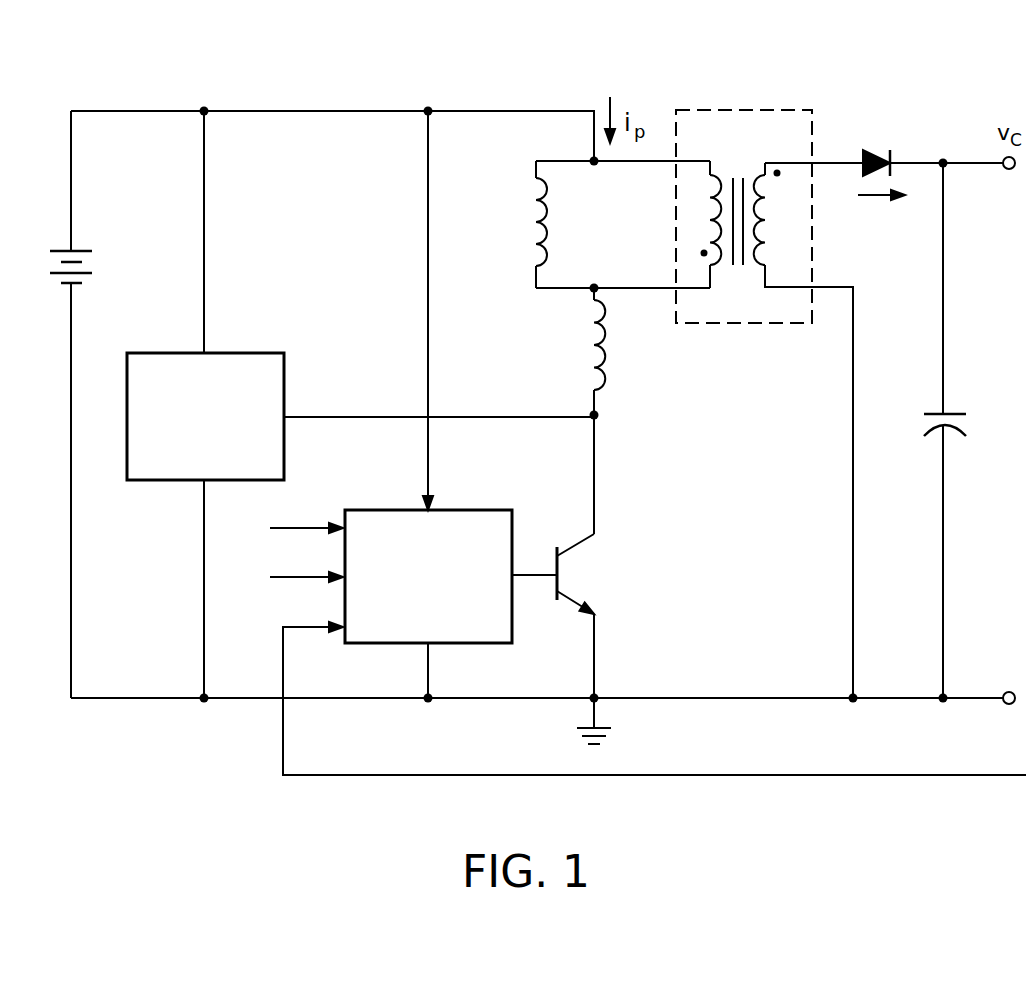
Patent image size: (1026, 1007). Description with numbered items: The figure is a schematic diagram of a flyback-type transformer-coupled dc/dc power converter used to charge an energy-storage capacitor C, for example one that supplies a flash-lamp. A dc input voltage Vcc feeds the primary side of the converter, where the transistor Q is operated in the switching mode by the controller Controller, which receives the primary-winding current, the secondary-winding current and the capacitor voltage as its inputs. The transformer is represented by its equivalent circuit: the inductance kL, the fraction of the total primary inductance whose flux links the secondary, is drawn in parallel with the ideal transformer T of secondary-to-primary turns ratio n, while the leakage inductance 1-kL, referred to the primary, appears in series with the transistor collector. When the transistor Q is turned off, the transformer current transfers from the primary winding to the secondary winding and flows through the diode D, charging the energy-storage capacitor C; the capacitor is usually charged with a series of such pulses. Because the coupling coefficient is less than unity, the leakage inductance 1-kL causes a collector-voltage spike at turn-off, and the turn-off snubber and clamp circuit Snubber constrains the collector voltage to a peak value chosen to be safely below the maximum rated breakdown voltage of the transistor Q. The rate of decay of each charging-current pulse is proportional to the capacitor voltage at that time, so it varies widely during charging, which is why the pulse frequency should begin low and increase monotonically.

The dc input voltage Vcc is at (108, 298).
The turn-off snubber and/or clamp circuit Snubber is at (205, 416).
The controller Controller is at (632, 622).
The transformer inductance in parallel with ideal transformer kL is at (595, 224).
The transformer leakage inductance 1-kL is at (533, 351).
The ideal transformer T is at (1025, 63).
The diode D is at (881, 176).
The energy-storage capacitor C is at (933, 412).
The transistor Q is at (604, 528).